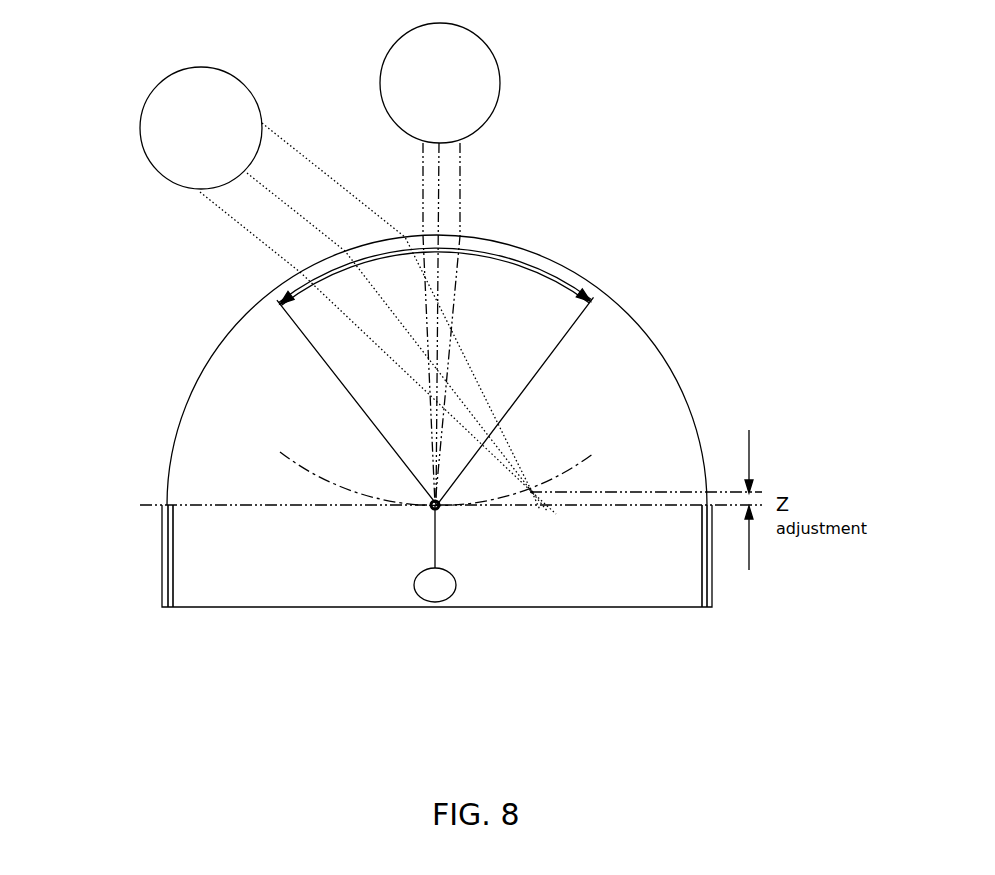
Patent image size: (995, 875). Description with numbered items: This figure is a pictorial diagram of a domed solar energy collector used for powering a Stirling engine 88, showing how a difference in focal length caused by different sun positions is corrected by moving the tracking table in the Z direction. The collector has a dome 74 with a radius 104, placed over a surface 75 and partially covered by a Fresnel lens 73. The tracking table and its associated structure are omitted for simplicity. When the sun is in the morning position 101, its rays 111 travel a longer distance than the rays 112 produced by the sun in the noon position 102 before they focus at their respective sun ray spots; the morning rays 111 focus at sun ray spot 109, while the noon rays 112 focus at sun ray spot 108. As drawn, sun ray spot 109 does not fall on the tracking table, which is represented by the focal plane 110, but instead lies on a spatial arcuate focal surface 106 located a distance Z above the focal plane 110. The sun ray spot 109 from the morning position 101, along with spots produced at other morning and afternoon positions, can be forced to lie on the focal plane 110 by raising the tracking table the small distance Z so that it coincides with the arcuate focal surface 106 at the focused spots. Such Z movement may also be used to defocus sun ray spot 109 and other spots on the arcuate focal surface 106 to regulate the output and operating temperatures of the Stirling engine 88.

The Fresnel lens 73 is at (525, 263).
The dome 74 is at (217, 357).
The surface 75 is at (302, 608).
The Stirling engine 88 is at (425, 588).
The morning position 101 is at (151, 162).
The noon position 102 is at (393, 60).
The radius 104 is at (540, 367).
The arcuate focal surface 106 is at (306, 472).
The sun ray spot 108 is at (433, 507).
The sun ray spot 109 is at (531, 496).
The focal plane 110 is at (291, 508).
The rays 111 is at (238, 218).
The rays 112 is at (442, 175).